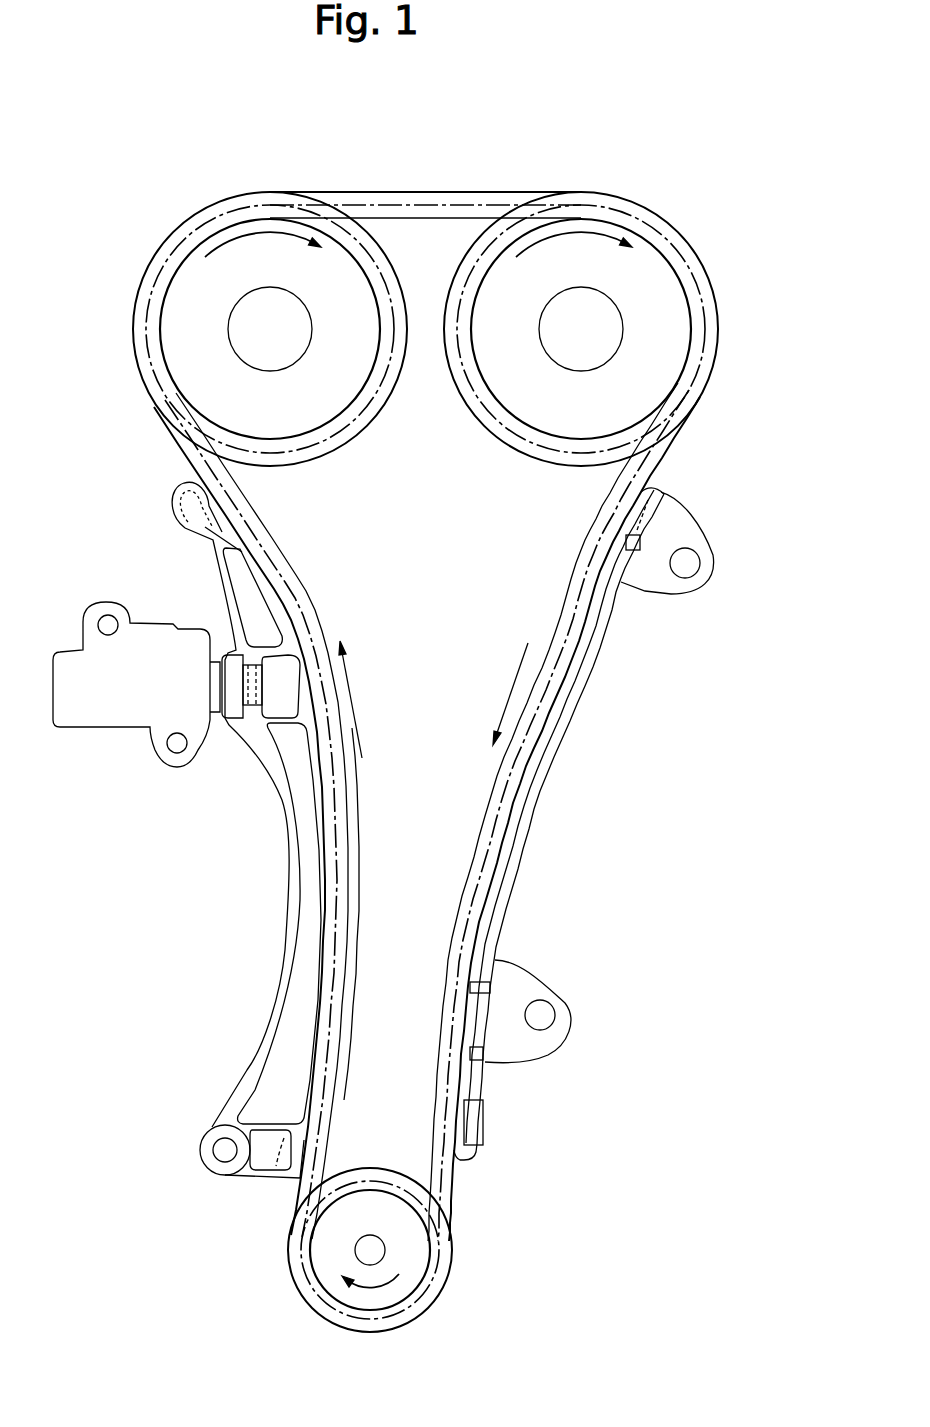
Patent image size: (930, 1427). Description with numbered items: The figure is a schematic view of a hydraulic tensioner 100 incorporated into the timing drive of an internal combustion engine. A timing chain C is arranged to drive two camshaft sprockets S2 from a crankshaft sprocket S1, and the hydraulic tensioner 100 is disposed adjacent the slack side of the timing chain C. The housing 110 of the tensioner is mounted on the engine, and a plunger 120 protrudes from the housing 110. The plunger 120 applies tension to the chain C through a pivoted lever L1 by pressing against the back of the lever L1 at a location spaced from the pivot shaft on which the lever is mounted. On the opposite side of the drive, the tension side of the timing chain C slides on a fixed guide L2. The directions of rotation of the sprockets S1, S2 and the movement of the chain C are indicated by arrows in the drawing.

The timing chain C is at (441, 190).
The camshaft sprocket S2 is at (315, 403).
The crankshaft sprocket S1 is at (413, 1258).
The hydraulic tensioner 100 is at (157, 742).
The housing 110 is at (105, 717).
The plunger 120 is at (228, 717).
The pivoted lever L1 is at (287, 931).
The fixed guide L2 is at (536, 829).